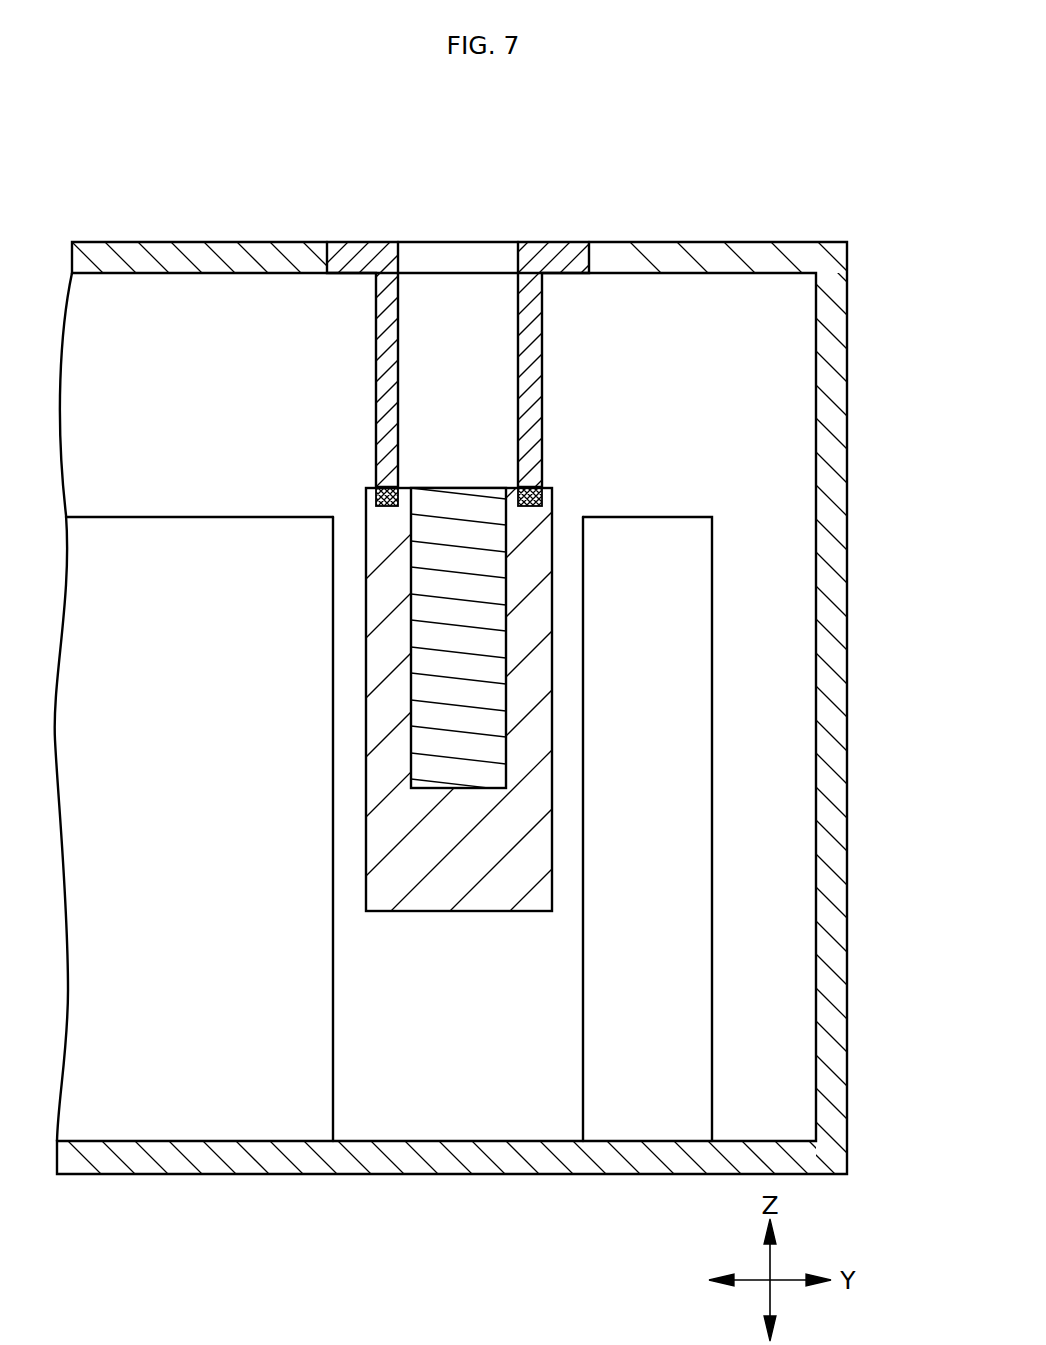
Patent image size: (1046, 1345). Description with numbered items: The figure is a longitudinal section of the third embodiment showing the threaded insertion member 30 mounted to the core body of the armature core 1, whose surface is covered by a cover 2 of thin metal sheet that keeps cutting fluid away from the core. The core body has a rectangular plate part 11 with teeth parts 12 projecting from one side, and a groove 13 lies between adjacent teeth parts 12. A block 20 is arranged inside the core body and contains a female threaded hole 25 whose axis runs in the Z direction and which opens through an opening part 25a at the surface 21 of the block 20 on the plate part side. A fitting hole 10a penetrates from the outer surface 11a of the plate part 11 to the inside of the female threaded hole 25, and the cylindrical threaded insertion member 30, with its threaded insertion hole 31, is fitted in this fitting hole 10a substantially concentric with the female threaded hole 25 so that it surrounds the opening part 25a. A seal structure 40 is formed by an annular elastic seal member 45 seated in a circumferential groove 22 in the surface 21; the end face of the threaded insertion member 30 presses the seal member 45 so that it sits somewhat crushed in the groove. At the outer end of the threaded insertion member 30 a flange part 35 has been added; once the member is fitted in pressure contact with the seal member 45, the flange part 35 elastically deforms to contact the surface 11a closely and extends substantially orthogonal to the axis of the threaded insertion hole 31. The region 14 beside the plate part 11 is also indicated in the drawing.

The armature core 1 is at (134, 320).
The cover 2 is at (767, 243).
The fitting hole 10a is at (520, 292).
The plate part 11 is at (238, 320).
The surface of the plate part 11a is at (172, 250).
The teeth parts 12 is at (455, 1085).
The groove 13 is at (190, 1085).
The fourth chamber 14 is at (777, 548).
The block 20 is at (365, 800).
The surface of the block 21 is at (380, 503).
The circumferential groove 22 is at (533, 503).
The female threaded hole 25 is at (430, 637).
The opening part 25a is at (478, 490).
The threaded insertion member 30 is at (545, 317).
The threaded insertion hole 31 is at (452, 285).
The flange part 35 is at (362, 242).
The seal structure 40 is at (384, 517).
The seal member 45 is at (380, 497).